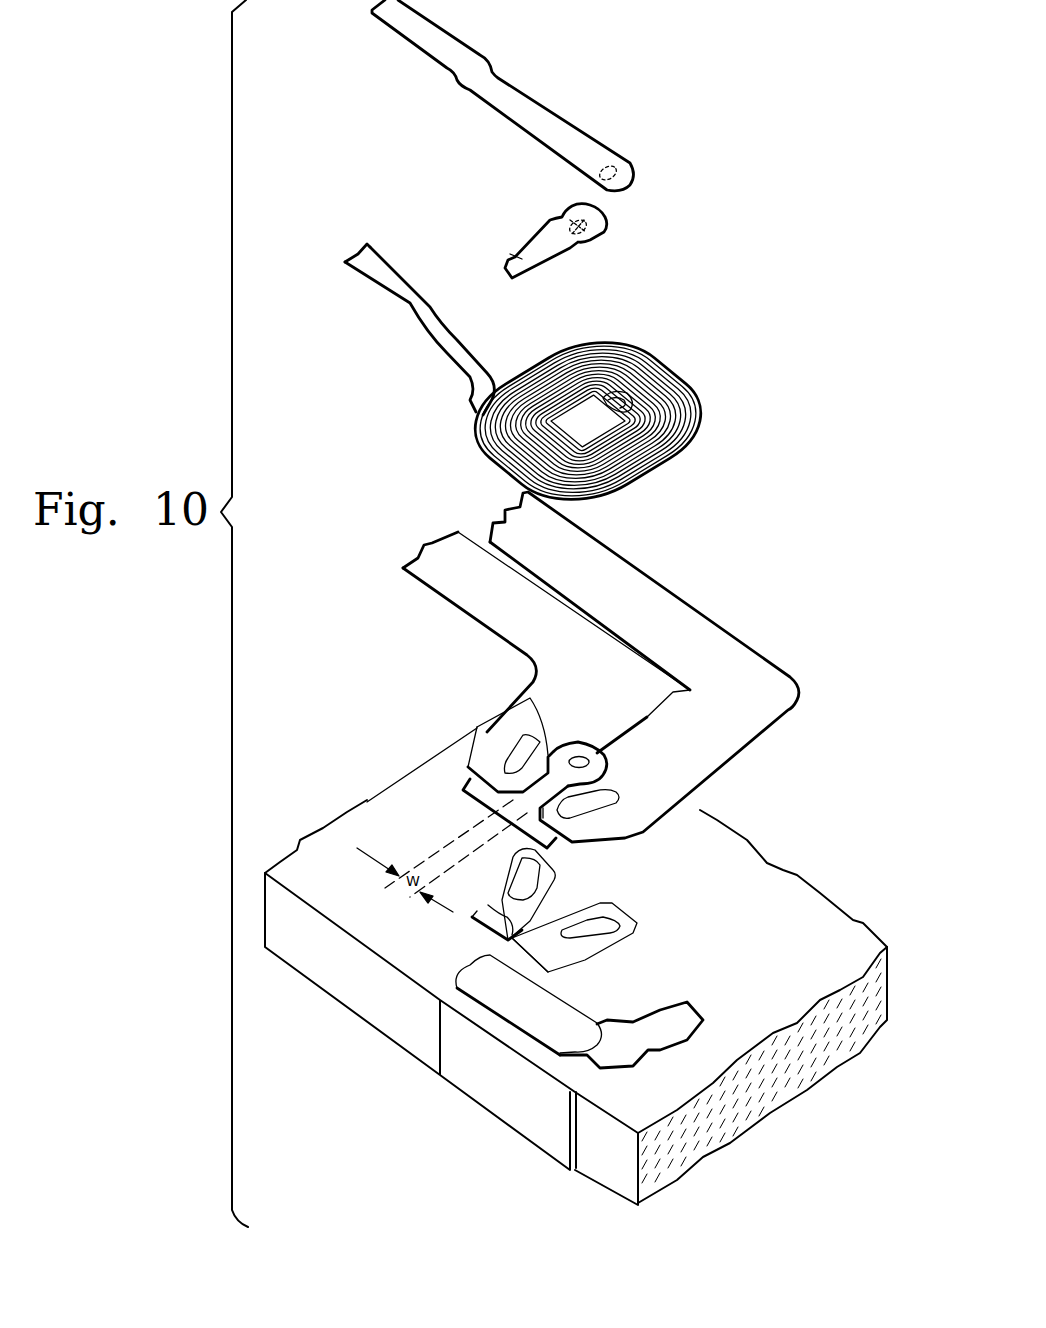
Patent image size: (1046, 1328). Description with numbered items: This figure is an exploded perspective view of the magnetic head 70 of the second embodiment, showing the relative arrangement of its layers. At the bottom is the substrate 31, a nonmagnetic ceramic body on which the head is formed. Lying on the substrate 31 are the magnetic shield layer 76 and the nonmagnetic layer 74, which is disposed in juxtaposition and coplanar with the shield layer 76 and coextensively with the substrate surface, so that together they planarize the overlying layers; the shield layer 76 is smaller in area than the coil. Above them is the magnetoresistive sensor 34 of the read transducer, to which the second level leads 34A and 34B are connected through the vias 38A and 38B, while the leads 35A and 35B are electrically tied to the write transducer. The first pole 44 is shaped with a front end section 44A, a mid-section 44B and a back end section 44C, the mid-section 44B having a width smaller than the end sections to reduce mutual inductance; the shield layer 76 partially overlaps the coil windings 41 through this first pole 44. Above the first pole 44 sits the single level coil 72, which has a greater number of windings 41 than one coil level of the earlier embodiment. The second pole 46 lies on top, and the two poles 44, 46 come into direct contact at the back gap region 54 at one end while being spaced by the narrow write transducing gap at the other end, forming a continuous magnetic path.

The substrate 31 is at (797, 874).
The magnetoresistive sensor 34 is at (495, 910).
The lead 34A is at (458, 603).
The lead 34B is at (766, 740).
The lead 35A is at (478, 928).
The lead 35B is at (577, 947).
The via 38A is at (528, 880).
The via 38B is at (605, 921).
The windings 41 is at (538, 357).
The first pole 44 is at (487, 759).
The front end section 44A is at (472, 778).
The mid-section 44B is at (545, 783).
The back end section 44C is at (548, 786).
The second pole 46 is at (533, 232).
The back gap region 54 is at (590, 216).
The magnetic head 70 is at (745, 186).
The single level coil 72 is at (679, 455).
The nonmagnetic layer 74 is at (645, 1013).
The magnetic shield layer 76 is at (471, 972).